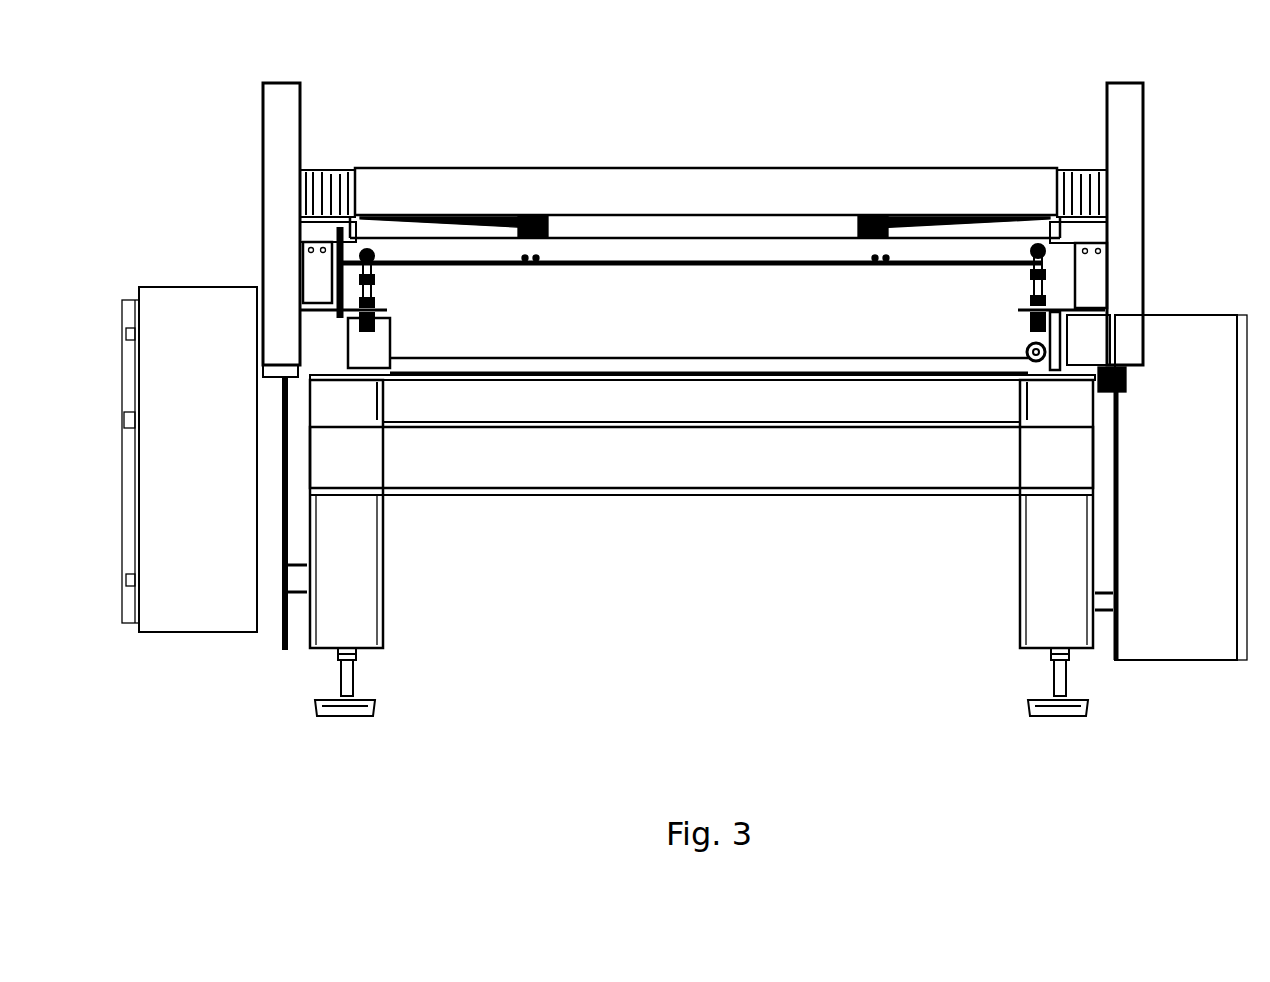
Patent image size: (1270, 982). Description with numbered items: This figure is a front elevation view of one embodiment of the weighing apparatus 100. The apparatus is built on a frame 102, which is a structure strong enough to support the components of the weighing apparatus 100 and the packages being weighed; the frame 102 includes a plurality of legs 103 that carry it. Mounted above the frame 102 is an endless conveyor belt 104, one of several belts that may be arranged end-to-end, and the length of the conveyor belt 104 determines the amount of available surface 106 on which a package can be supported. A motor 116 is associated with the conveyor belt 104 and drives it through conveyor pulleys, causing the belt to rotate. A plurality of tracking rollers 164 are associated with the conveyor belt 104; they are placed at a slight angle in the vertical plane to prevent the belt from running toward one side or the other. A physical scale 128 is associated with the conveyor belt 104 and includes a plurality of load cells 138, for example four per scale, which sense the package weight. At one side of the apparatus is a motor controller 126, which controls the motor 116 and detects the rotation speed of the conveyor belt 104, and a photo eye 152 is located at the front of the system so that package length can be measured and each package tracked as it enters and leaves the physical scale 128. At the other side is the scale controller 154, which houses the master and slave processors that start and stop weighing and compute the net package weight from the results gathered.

The weighing apparatus 100 is at (788, 105).
The frame 102 is at (714, 468).
The legs 103 is at (350, 558).
The endless conveyor belts 104 is at (993, 167).
The surface 106 is at (864, 163).
The motor 116 is at (709, 345).
The motor controller 126 is at (221, 455).
The physical scale 128 is at (433, 247).
The load cells 138 is at (312, 275).
The photo eye 152 is at (1120, 105).
The scale controller 154 is at (1196, 488).
The tracking rollers 164 is at (705, 169).